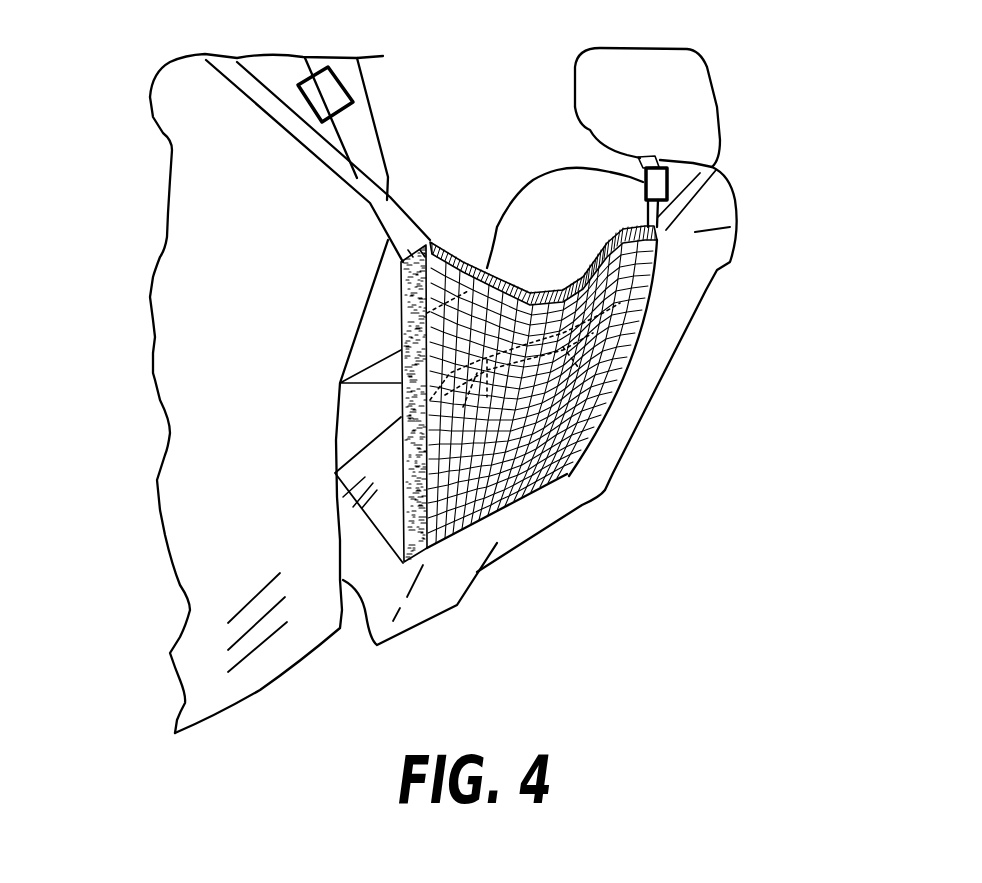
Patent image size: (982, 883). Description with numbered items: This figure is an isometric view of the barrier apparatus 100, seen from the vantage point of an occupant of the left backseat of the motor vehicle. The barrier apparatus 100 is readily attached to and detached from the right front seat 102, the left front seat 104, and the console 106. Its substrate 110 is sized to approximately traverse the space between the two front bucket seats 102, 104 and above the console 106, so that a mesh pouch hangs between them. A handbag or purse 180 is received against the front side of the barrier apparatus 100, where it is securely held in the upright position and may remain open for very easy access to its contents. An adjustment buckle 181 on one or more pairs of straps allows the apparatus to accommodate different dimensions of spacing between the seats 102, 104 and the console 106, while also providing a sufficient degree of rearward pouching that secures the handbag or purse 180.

The barrier apparatus 100 is at (577, 472).
The right front seat 102 is at (733, 207).
The left front seat 104 is at (257, 692).
The console 106 is at (413, 608).
The substrate 110 is at (590, 395).
The handbag or purse 180 is at (335, 473).
The adjustment buckle 181 is at (341, 86).